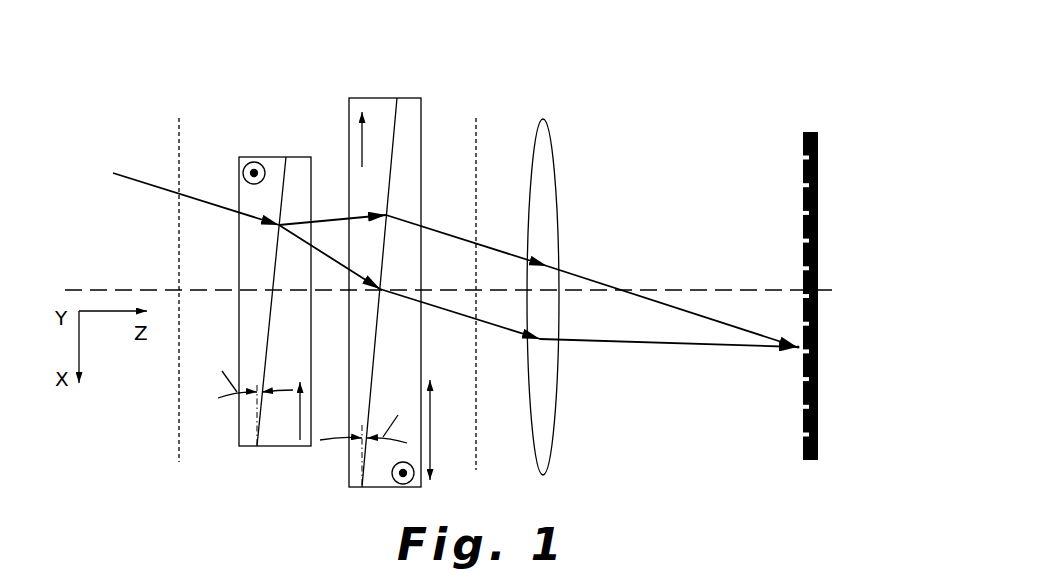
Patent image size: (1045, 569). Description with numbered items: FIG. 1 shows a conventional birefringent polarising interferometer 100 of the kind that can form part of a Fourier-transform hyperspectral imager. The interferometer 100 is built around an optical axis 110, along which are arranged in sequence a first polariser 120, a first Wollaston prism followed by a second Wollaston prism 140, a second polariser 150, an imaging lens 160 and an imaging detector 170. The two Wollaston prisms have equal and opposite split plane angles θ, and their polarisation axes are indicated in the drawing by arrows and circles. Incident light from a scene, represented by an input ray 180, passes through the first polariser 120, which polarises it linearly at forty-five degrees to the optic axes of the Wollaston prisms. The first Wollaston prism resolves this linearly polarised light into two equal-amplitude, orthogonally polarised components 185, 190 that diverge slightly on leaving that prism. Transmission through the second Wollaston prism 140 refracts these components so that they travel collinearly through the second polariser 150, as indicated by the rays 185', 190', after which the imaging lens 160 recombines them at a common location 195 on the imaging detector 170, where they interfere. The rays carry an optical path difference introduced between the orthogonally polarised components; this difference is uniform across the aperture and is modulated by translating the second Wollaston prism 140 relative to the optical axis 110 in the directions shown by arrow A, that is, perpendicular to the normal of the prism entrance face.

The birefringent polarising interferometer 100 is at (738, 104).
The optical axis 110 is at (717, 289).
The first polariser 120 is at (273, 157).
The second Wollaston prism 140 is at (388, 98).
The second polariser 150 is at (478, 118).
The imaging lens 160 is at (552, 142).
The imaging detector 170 is at (818, 390).
The input ray 180 is at (186, 187).
The orthogonally polarised component 185 is at (406, 168).
The orthogonally polarised component 190 is at (404, 363).
The ray 185' is at (672, 282).
The ray 190' is at (668, 381).
The common location 195 is at (797, 350).